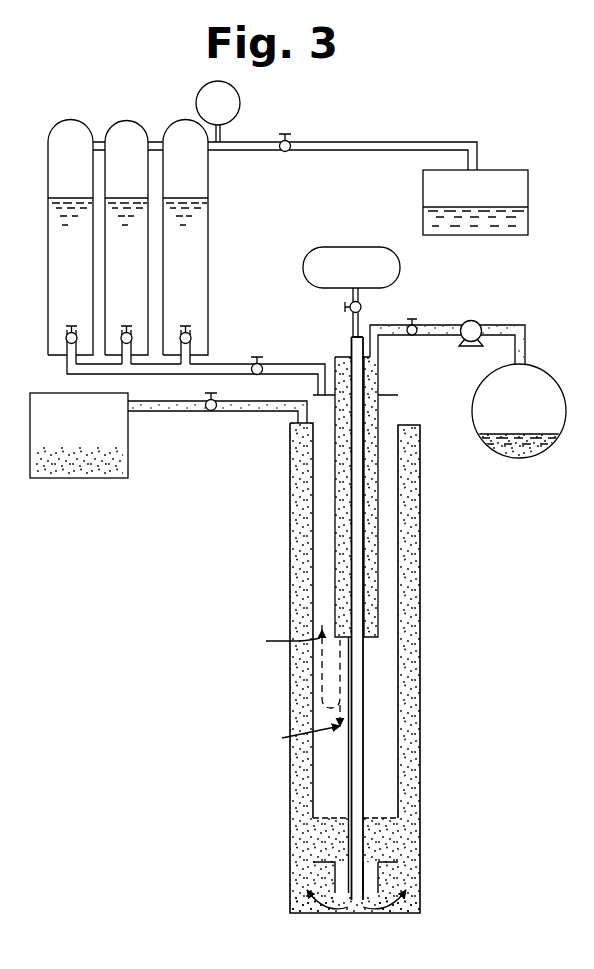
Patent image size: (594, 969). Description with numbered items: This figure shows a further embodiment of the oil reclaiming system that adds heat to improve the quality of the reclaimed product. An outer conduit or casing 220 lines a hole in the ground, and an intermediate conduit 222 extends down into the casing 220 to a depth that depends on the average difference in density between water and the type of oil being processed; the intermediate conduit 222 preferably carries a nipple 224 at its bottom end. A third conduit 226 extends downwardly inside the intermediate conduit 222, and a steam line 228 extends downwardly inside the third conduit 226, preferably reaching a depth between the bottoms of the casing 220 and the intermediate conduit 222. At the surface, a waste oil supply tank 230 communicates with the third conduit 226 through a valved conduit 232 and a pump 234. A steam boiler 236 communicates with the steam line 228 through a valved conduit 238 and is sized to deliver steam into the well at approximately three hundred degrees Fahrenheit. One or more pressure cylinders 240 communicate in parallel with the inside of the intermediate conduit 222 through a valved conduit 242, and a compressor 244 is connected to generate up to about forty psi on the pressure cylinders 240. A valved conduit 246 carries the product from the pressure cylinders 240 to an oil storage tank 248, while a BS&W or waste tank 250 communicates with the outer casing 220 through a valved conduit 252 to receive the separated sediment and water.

The casing 220 is at (414, 782).
The intermediate conduit 222 is at (398, 658).
The nipple 224 is at (375, 882).
The third conduit 226 is at (375, 598).
The steam line 228 is at (363, 505).
The waste oil supply tank 230 is at (573, 369).
The valved conduit 232 is at (423, 337).
The pump 234 is at (482, 322).
The steam boiler 236 is at (401, 268).
The valved conduit 238 is at (362, 307).
The pressure cylinders 240 is at (164, 126).
The valved conduit 242 is at (285, 364).
The compressor 244 is at (205, 90).
The valved conduit 246 is at (322, 152).
The oil storage tank 248 is at (520, 172).
The BS&W tank 250 is at (128, 436).
The valved conduit 252 is at (235, 413).